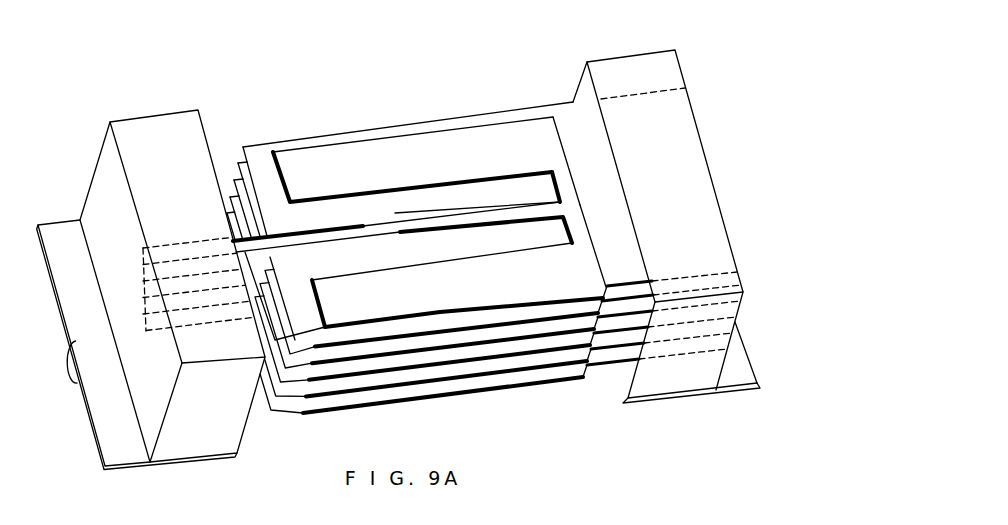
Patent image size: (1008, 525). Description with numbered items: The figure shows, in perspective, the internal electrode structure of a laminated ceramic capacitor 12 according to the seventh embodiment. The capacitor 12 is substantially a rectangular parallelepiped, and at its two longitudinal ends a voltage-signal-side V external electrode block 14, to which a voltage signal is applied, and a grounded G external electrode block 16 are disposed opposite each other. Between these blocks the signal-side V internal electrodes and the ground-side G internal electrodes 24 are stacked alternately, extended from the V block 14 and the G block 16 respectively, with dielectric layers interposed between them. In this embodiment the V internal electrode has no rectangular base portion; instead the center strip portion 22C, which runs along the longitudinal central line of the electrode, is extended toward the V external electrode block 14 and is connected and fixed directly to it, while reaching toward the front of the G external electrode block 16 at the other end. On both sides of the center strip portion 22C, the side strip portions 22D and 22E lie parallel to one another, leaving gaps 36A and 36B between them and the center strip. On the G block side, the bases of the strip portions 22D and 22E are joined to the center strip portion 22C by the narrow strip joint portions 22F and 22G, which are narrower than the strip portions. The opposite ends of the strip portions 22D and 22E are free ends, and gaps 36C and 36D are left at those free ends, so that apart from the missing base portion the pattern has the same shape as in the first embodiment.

The laminated ceramic capacitor 12 is at (396, 97).
The V external electrode block 14 is at (155, 120).
The G external electrode block 16 is at (632, 63).
The center strip portion 22C is at (486, 278).
The both-side strip portion 22D is at (456, 159).
The both-side strip portion 22E is at (455, 292).
The narrow strip joint portion 22F is at (565, 182).
The narrow strip joint portion 22G is at (578, 230).
The G internal electrode 24 is at (622, 268).
The gap 36A is at (447, 193).
The gap 36B is at (417, 255).
The gap 36C is at (277, 185).
The gap 36D is at (312, 302).